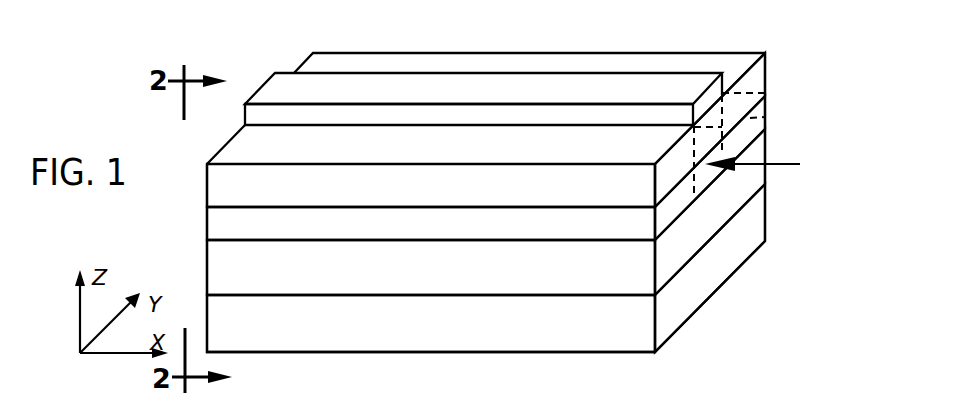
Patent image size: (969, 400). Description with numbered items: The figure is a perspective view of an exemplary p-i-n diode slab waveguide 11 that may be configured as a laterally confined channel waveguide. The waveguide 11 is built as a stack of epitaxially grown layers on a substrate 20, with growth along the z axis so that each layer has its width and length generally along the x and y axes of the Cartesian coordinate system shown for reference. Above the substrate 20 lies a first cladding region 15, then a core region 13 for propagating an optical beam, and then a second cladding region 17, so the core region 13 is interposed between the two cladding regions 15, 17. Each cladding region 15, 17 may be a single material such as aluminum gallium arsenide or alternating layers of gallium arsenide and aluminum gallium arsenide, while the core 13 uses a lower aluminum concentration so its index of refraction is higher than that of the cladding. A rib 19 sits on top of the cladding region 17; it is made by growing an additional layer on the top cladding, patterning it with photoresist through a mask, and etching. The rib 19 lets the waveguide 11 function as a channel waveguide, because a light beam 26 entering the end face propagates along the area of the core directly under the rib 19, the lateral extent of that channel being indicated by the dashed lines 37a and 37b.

The p-i-n diode waveguide 11 is at (750, 45).
The rib 19 is at (521, 102).
The second cladding region 17 is at (558, 201).
The core region 13 is at (524, 236).
The first cladding region 15 is at (558, 280).
The substrate 20 is at (561, 336).
The dashed line 37a is at (771, 88).
The dashed line 37b is at (771, 114).
The light beam 26 is at (785, 166).